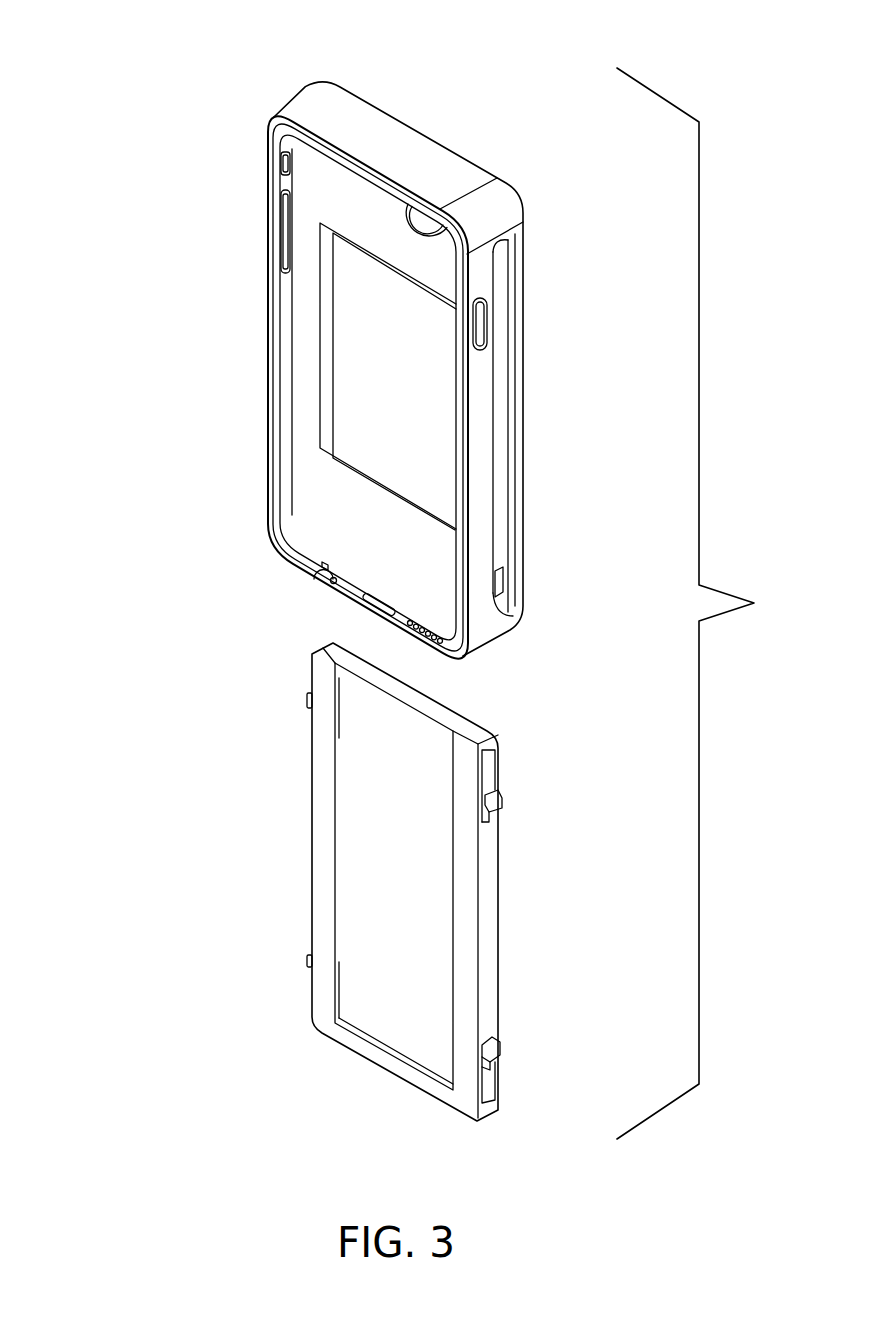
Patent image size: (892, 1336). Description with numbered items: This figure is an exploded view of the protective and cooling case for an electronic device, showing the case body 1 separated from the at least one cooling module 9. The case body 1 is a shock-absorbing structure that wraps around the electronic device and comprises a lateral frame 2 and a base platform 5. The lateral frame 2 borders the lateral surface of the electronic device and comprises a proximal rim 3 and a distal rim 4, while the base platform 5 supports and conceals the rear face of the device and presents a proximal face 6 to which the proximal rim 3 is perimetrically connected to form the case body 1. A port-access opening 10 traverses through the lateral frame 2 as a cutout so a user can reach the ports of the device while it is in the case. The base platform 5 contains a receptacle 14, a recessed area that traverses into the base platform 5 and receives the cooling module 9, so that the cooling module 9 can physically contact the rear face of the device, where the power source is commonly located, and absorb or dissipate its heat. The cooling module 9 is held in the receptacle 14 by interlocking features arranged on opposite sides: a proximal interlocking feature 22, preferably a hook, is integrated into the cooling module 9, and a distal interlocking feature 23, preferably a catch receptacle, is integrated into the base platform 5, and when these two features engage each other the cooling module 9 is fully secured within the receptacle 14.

The case body 1 is at (198, 47).
The lateral frame 2 is at (248, 248).
The proximal rim 3 is at (293, 162).
The distal rim 4 is at (270, 118).
The base platform 5 is at (543, 385).
The proximal face 6 is at (388, 238).
The cooling module 9 is at (278, 804).
The port-access opening 10 is at (373, 595).
The receptacle 14 is at (342, 452).
The proximal interlocking feature 22 is at (500, 1056).
The distal interlocking feature 23 is at (498, 580).